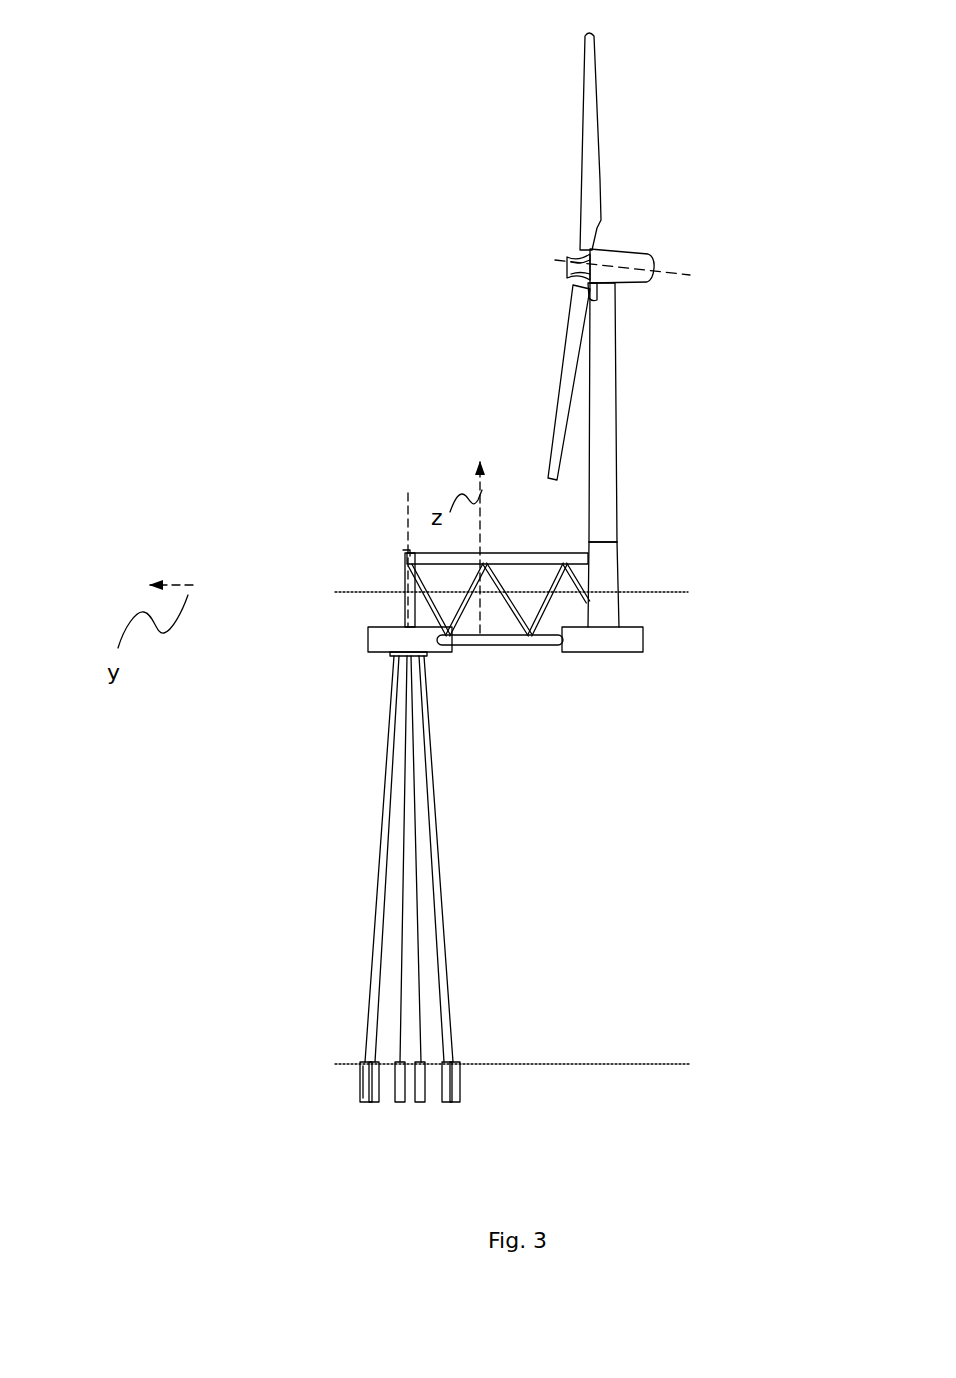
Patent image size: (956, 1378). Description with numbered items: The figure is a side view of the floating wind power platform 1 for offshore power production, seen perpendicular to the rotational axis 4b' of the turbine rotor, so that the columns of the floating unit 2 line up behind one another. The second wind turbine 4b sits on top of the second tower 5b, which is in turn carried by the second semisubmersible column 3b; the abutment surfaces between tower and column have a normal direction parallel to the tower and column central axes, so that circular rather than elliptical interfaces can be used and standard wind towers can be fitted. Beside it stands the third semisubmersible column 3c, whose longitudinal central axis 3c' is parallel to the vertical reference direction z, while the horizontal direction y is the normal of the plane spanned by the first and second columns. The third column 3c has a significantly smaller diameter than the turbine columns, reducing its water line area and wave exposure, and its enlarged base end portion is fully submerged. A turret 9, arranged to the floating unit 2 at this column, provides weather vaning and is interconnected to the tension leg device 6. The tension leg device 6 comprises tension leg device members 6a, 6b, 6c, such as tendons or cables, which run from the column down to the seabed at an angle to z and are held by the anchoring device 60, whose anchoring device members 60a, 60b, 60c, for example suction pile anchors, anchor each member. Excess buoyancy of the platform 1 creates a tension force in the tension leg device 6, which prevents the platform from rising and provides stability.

The floating wind power platform 1 is at (436, 282).
The floating unit 2 is at (722, 502).
The second semisubmersible column 3b is at (619, 583).
The third semisubmersible column 3c is at (359, 601).
The longitudinal central axis 3c' is at (355, 559).
The second wind turbine 4b is at (674, 238).
The rotational axis 4b' is at (531, 299).
The second tower 5b is at (617, 430).
The tension leg device 6 is at (152, 812).
The tension leg device member 6a is at (378, 1013).
The tension leg device member 6b is at (402, 998).
The tension leg device member 6c is at (367, 1035).
The turret 9 is at (395, 665).
The anchoring device 60 is at (299, 1110).
The anchoring device member 60a is at (370, 1075).
The anchoring device member 60b is at (402, 1085).
The anchoring device member 60c is at (363, 1093).